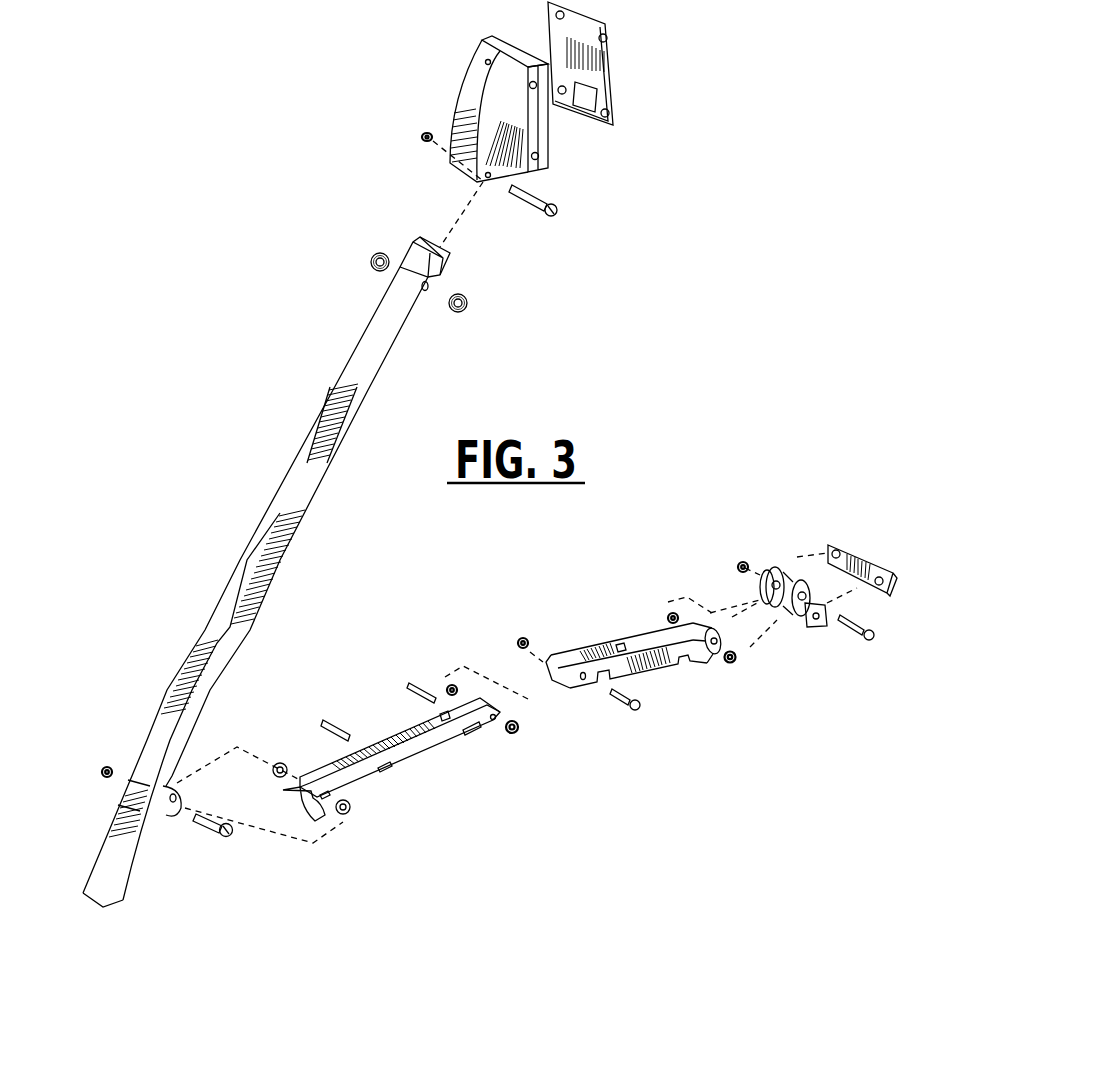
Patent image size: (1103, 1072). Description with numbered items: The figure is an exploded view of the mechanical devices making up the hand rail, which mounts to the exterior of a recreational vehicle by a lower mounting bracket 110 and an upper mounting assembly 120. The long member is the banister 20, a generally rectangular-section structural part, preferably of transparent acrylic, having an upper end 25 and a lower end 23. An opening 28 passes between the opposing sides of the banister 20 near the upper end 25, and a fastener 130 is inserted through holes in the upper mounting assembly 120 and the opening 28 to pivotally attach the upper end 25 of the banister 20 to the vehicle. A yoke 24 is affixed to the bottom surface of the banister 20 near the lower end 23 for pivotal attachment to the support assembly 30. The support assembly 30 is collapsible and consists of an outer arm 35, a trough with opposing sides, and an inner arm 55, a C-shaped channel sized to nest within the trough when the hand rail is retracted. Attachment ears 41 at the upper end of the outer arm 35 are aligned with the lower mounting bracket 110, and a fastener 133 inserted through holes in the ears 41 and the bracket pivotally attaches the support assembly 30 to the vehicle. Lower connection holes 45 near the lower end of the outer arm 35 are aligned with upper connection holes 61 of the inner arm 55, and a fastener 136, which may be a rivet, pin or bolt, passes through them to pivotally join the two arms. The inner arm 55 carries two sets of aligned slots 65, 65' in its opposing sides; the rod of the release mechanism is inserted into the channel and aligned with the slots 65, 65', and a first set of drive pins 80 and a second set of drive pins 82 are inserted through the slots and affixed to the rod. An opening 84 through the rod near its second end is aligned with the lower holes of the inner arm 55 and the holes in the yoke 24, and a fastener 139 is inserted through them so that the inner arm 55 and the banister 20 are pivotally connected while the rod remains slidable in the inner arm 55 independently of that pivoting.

The banister 20 is at (232, 597).
The lower end 23 is at (95, 903).
The yoke 24 is at (160, 812).
The upper end 25 is at (445, 252).
The opening 28 is at (428, 289).
The support assembly 30 is at (603, 772).
The outer arm 35 is at (653, 673).
The attachment ears 41 is at (707, 627).
The lower connection holes 45 is at (583, 679).
The inner arm 55 is at (420, 752).
The upper connection holes 61 is at (494, 719).
The aligned slots 65 is at (404, 792).
The aligned slots 65' is at (478, 758).
The first set of drive pins 80 is at (423, 697).
The second set of drive pins 82 is at (335, 722).
The opening 84 is at (327, 795).
The lower mounting bracket 110 is at (805, 550).
The upper mounting assembly 120 is at (562, 152).
The fastener 130 is at (547, 214).
The fastener 133 is at (868, 640).
The fastener 136 is at (637, 708).
The fastener 139 is at (215, 833).